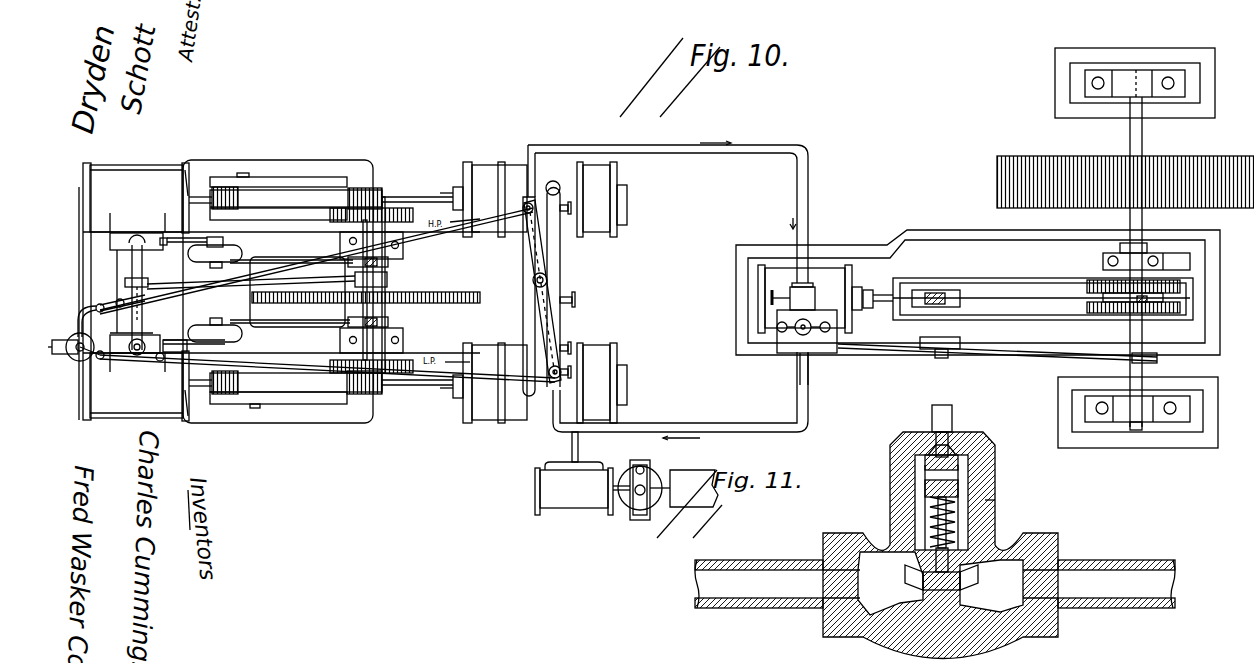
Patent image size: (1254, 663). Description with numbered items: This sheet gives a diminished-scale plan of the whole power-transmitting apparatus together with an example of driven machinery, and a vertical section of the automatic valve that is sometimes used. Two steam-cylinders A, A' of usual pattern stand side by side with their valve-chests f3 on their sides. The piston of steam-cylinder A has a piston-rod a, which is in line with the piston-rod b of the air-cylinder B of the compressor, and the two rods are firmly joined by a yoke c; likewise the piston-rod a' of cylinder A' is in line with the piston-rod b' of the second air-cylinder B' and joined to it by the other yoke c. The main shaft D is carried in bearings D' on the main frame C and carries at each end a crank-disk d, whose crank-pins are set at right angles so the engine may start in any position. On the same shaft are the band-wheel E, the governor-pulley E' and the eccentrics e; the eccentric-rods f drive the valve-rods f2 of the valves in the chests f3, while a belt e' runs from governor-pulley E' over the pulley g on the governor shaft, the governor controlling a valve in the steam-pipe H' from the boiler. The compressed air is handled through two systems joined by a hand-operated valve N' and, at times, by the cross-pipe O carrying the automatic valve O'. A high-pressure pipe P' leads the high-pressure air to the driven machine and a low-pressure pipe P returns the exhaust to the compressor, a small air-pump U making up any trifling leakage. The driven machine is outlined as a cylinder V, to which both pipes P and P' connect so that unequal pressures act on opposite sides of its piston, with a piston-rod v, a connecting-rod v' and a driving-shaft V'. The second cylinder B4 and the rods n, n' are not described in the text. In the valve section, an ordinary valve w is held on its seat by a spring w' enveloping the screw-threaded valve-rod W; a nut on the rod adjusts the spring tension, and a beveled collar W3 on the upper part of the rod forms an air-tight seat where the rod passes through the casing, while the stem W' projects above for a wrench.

In FIG. 10, the steam-cylinder A is at (151, 198).
In FIG. 10, the piston-rod a is at (199, 170).
In FIG. 10, the steam-cylinder A' is at (151, 386).
In FIG. 10, the piston-rod a' is at (198, 418).
In FIG. 10, the yoke c is at (331, 290).
In FIG. 10, the crank-disk d is at (394, 210).
In FIG. 10, the piston-rod b is at (441, 191).
In FIG. 10, the piston-rod b' is at (438, 402).
In FIG. 10, the air-cylinder B is at (490, 177).
In FIG. 10, the auxiliary cylinder B4 is at (624, 201).
In FIG. 10, the air-cylinder B' is at (568, 395).
In FIG. 10, the main frame C is at (353, 438).
In FIG. 10, the main shaft D is at (415, 313).
In FIG. 10, the bearing D' is at (361, 293).
In FIG. 10, the band-wheel E is at (366, 286).
In FIG. 10, the governor-pulley E' is at (384, 281).
In FIG. 10, the eccentric e is at (377, 291).
In FIG. 10, the belt e' is at (251, 279).
In FIG. 10, the eccentric-rod f is at (250, 262).
In FIG. 10, the valve-rod f2 is at (190, 255).
In FIG. 10, the valve-chest f3 is at (116, 243).
In FIG. 10, the pulley g is at (102, 302).
In FIG. 10, the steam-pipe H' is at (76, 358).
In FIG. 10, the lower connecting rod n is at (327, 373).
In FIG. 10, the upper connecting rod n' is at (316, 298).
In FIG. 10, the valve N' is at (542, 288).
In FIG. 10, the automatic valve O' is at (563, 274).
In FIG. 11, the automatic valve O' is at (1002, 491).
In FIG. 10, the low-pressure pipe P is at (680, 398).
In FIG. 10, the high-pressure pipe P' is at (684, 206).
In FIG. 10, the air-pump U is at (626, 476).
In FIG. 10, the cylinder V is at (805, 325).
In FIG. 10, the piston-rod v is at (1022, 290).
In FIG. 10, the connecting-rod v' is at (997, 332).
In FIG. 10, the driving-shaft V' is at (1119, 248).
In FIG. 11, the valve-rod W is at (940, 545).
In FIG. 11, the valve stem W' is at (960, 423).
In FIG. 11, the beveled collar W3 is at (920, 433).
In FIG. 11, the valve w is at (941, 579).
In FIG. 11, the spring w' is at (978, 522).
In FIG. 11, the pipe O is at (935, 584).